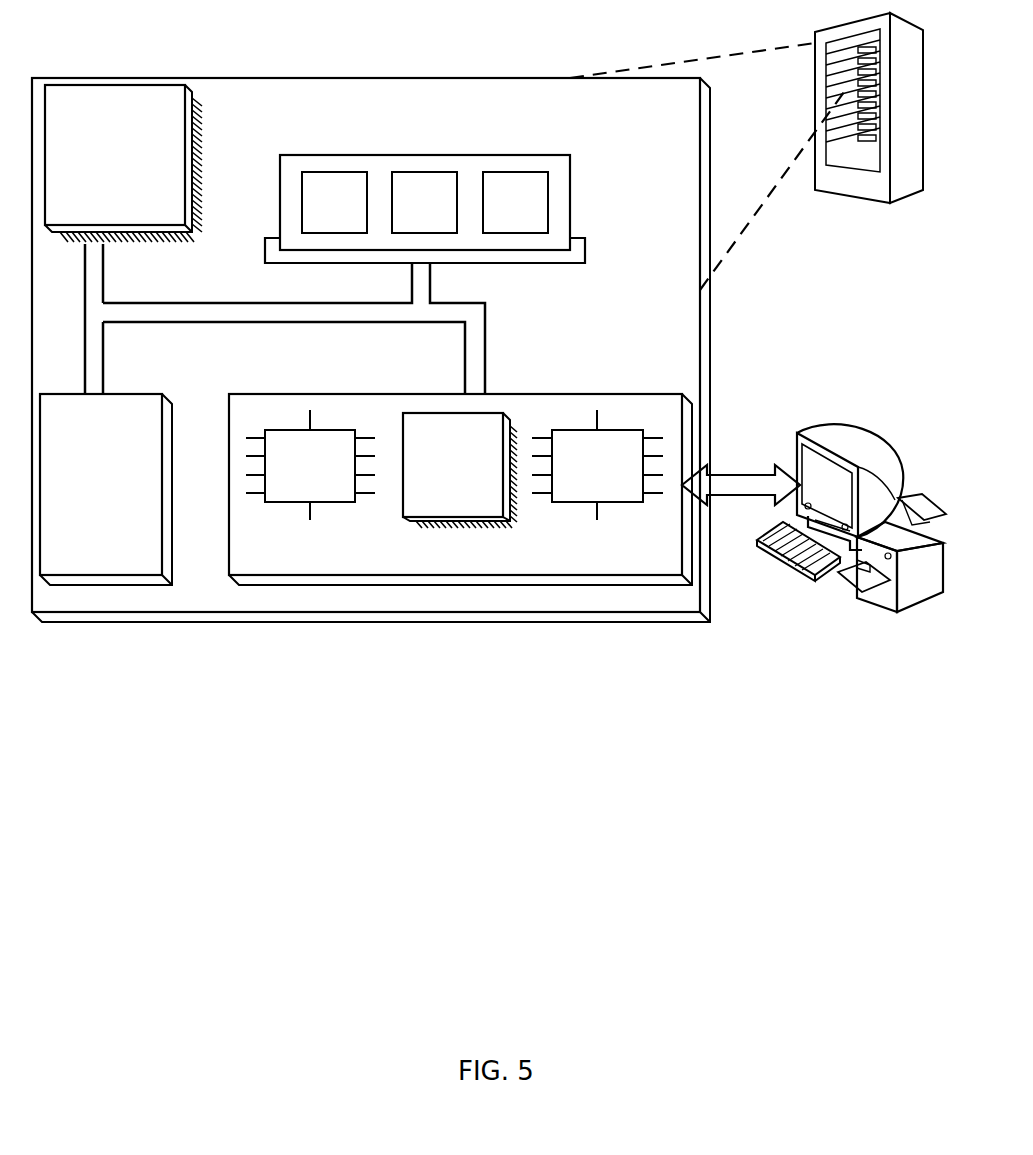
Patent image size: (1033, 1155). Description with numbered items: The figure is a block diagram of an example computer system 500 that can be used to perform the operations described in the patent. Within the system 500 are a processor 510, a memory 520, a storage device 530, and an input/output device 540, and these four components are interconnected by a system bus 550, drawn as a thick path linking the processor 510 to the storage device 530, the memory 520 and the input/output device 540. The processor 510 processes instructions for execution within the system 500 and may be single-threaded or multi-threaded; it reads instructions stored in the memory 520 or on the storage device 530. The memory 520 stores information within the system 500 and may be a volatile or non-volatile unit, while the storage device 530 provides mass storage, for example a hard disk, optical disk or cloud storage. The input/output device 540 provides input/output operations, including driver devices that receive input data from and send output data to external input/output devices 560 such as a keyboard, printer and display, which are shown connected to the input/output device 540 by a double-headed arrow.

The computer system 500 is at (165, 54).
The processor 510 is at (176, 217).
The memory 520 is at (570, 200).
The storage device 530 is at (107, 567).
The input/output device 540 is at (643, 394).
The system bus 550 is at (282, 322).
The input/output devices 560 is at (797, 433).